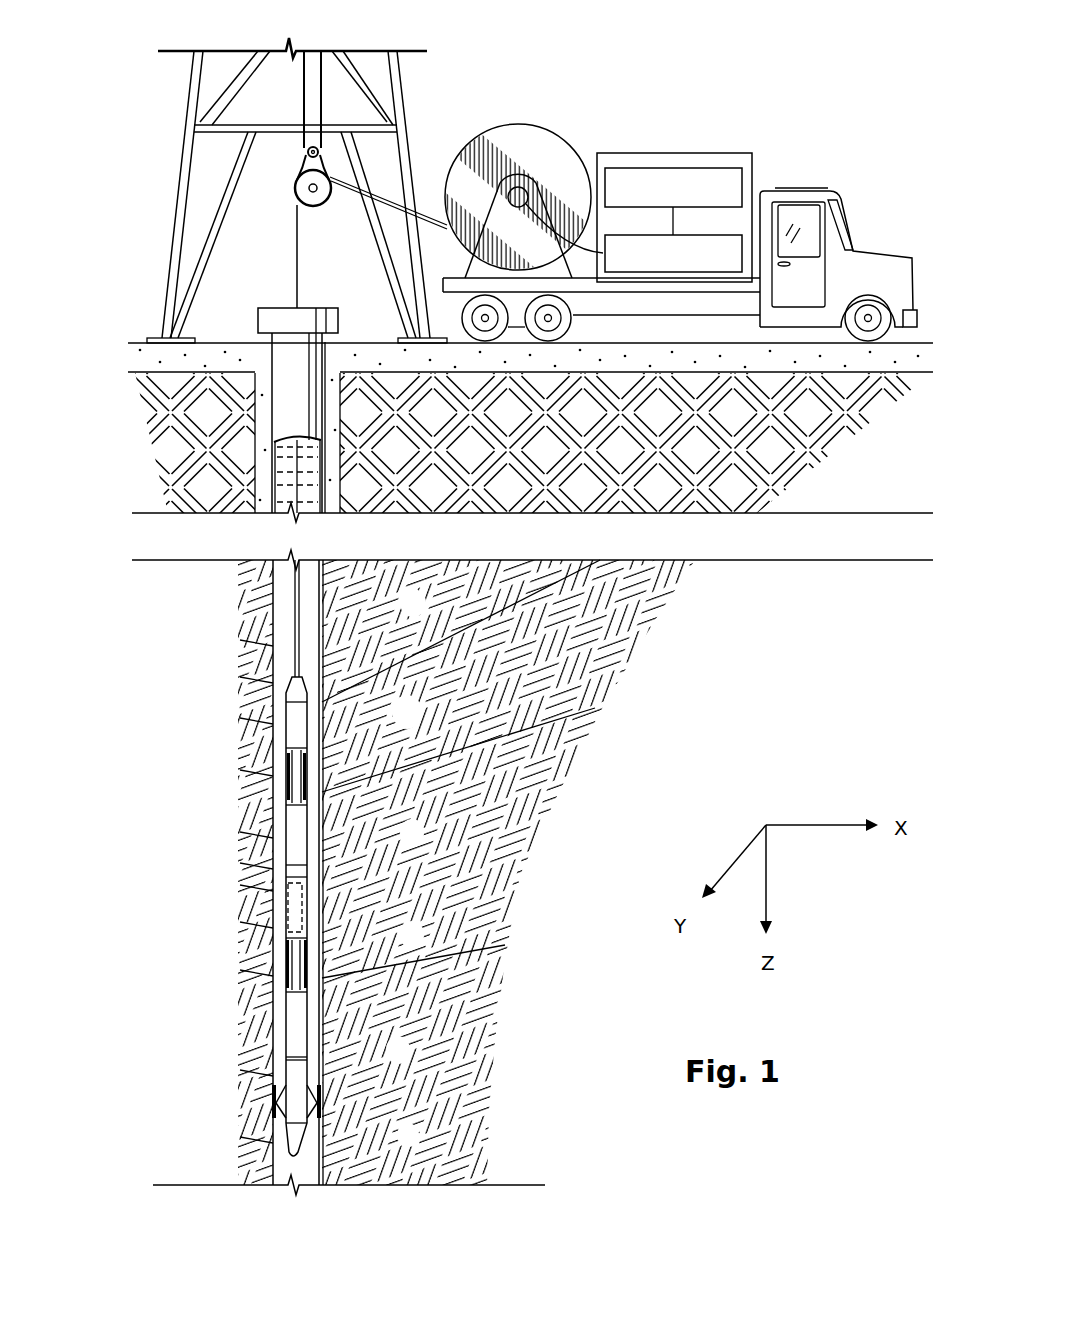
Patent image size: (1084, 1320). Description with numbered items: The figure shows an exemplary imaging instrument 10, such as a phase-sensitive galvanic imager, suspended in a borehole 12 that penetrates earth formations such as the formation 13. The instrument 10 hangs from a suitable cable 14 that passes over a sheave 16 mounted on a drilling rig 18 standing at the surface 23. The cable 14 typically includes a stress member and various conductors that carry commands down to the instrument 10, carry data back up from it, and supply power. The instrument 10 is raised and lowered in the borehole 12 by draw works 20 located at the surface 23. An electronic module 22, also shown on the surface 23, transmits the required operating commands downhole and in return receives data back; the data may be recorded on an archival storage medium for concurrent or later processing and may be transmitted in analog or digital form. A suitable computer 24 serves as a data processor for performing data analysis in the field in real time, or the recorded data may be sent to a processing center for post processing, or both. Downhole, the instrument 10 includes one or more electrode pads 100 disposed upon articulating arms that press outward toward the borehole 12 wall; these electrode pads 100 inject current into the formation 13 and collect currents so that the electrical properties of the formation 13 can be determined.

The imaging instrument 10 is at (293, 1017).
The borehole 12 is at (270, 593).
The formation 13 is at (497, 884).
The cable 14 is at (300, 287).
The sheave 16 is at (305, 193).
The drilling rig 18 is at (195, 133).
The draw works 20 is at (522, 123).
The electronic module 22 is at (705, 253).
The surface 23 is at (137, 340).
The computer 24 is at (732, 185).
The electrode pad 100 is at (272, 1105).